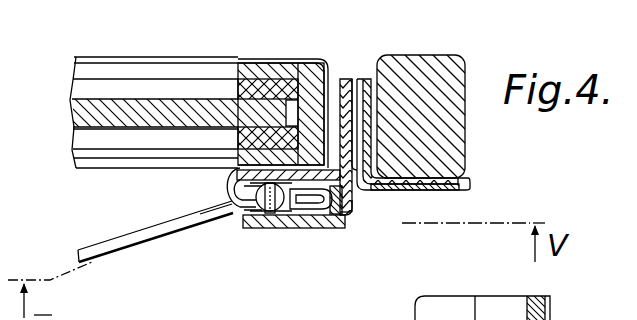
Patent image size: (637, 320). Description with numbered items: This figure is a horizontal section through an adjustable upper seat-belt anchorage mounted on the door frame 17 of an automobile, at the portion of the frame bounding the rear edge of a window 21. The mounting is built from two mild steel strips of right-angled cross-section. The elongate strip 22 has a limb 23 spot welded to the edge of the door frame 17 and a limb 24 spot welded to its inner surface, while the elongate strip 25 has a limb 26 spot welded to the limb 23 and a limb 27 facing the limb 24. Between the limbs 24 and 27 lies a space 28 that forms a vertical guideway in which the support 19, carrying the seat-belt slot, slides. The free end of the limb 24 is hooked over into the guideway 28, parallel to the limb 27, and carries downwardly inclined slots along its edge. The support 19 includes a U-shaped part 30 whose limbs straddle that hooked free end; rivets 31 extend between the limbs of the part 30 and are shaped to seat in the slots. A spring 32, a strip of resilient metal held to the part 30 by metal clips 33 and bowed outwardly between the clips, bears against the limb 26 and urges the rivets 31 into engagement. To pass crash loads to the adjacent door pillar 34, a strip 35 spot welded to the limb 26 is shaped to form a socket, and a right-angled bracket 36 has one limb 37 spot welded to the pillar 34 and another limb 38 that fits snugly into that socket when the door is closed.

The door frame 17 is at (266, 86).
The support 19 is at (181, 240).
The window 21 is at (150, 100).
The elongate strip 22 is at (236, 181).
The limb 23 is at (332, 80).
The limb 24 is at (236, 204).
The elongate strip 25 is at (355, 205).
The limb 26 is at (350, 215).
The limb 27 is at (266, 223).
The space 28 is at (304, 227).
The U-shaped part 30 is at (248, 218).
The rivets 31 is at (246, 226).
The spring 32 is at (338, 227).
The metal clips 33 is at (283, 229).
The door pillar 34 is at (451, 76).
The strip 35 is at (366, 92).
The right-angled bracket 36 is at (448, 197).
The limb 37 is at (471, 196).
The limb 38 is at (348, 88).